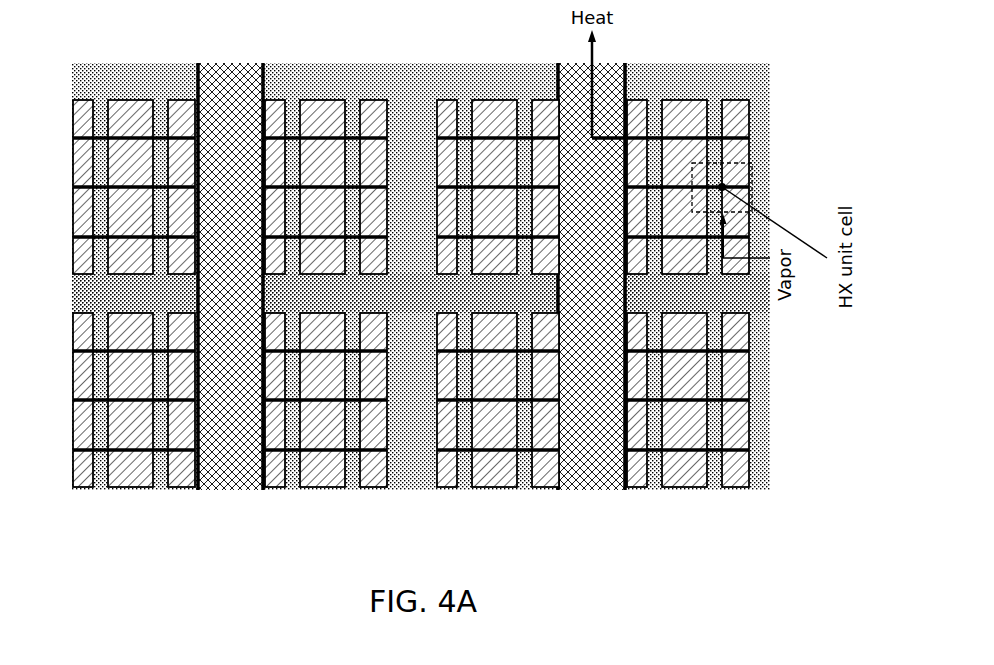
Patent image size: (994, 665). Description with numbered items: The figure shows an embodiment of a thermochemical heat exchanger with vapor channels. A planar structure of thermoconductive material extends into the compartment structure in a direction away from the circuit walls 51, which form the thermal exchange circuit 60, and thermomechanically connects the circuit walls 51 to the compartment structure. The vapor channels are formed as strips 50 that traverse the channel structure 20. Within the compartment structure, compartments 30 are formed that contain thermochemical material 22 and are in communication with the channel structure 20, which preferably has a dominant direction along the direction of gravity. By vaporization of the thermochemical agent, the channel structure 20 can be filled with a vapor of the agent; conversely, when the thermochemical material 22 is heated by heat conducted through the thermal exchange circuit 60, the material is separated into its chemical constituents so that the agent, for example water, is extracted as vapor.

The channel structure 20 is at (722, 100).
The thermochemical material 22 is at (490, 110).
The compartments 30 is at (90, 292).
The strips 50 is at (492, 462).
The circuit walls 51 is at (186, 78).
The thermal exchange circuit 60 is at (231, 462).